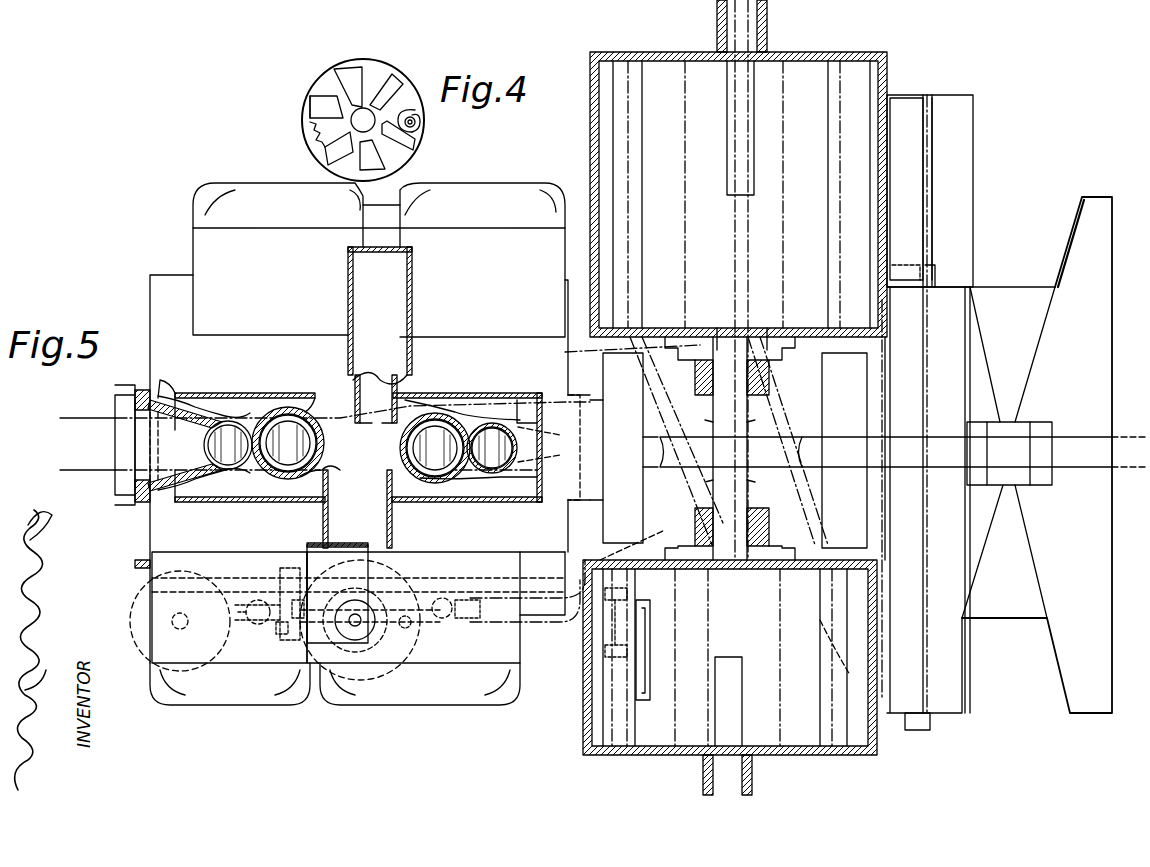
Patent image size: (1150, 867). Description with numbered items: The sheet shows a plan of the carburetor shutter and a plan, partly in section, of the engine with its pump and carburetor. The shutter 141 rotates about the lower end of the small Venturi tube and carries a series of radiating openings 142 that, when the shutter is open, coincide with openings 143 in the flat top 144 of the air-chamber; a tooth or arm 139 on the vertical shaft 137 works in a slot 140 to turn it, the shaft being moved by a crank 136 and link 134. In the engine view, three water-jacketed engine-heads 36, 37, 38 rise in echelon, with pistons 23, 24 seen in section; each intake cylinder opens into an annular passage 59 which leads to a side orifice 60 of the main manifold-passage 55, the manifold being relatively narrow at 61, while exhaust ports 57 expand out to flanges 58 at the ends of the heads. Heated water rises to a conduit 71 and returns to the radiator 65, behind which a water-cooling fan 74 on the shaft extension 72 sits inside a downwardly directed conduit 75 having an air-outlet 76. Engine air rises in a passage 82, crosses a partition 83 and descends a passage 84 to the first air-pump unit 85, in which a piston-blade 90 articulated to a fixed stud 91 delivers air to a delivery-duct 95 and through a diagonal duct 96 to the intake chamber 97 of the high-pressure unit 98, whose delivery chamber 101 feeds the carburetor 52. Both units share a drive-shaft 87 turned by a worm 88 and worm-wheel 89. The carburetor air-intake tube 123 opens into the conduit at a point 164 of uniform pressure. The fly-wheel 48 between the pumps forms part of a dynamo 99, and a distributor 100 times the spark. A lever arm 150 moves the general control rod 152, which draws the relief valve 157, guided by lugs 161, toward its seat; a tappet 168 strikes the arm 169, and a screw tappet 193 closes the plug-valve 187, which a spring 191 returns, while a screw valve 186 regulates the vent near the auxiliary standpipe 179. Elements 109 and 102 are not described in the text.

In FIG. 4, the shutter 141 is at (375, 62).
In FIG. 4, the radiating openings 142 is at (338, 88).
In FIG. 4, the openings 143 is at (310, 118).
In FIG. 4, the flat top 144 is at (312, 140).
In FIG. 4, the slot 140 is at (418, 102).
In FIG. 4, the tooth or arm 139 is at (420, 122).
In FIG. 4, the vertical shaft 137 is at (418, 126).
In FIG. 5, the air-pump unit 85 is at (890, 66).
In FIG. 5, the fixed stud 91 is at (752, 170).
In FIG. 5, the delivery-duct 95 is at (741, 194).
In FIG. 5, the piston-blade 90 is at (686, 232).
In FIG. 5, the passage 84 is at (906, 189).
In FIG. 5, the partition 83 is at (933, 180).
In FIG. 5, the passage 82 is at (968, 412).
In FIG. 5, the conduit 75 is at (1075, 210).
In FIG. 5, the water-cooling fan 74 is at (1008, 452).
In FIG. 5, the air-outlet 76 is at (944, 322).
In FIG. 5, the radiator 65 is at (1110, 328).
In FIG. 5, the shaft extension 72 is at (950, 428).
In FIG. 5, the distributor 100 is at (822, 373).
In FIG. 5, the diagonal duct 96 is at (775, 398).
In FIG. 5, the worm-wheel 89 is at (806, 450).
In FIG. 5, the worm 88 is at (758, 472).
In FIG. 5, the drive-shaft 87 is at (760, 492).
In FIG. 5, the intake point 164 is at (735, 470).
In FIG. 5, the flange 58 is at (130, 392).
In FIG. 5, the exhaust port 57 is at (200, 435).
In FIG. 5, the piston 24 is at (360, 447).
In FIG. 5, the piston 23 is at (361, 445).
In FIG. 5, the annular passage 59 is at (257, 411).
In FIG. 5, the main manifold-passage 55 is at (352, 461).
In FIG. 5, the narrow manifold portion 61 is at (405, 400).
In FIG. 5, the side orifice 60 is at (327, 479).
In FIG. 5, the engine-head 37 is at (485, 503).
In FIG. 5, the engine-head 36 is at (518, 556).
In FIG. 5, the engine-head 38 is at (379, 260).
In FIG. 5, the conduit 71 is at (470, 350).
In FIG. 5, the fly-wheel 48 is at (580, 459).
In FIG. 5, the dynamo 99 is at (603, 525).
In FIG. 5, the lever arm 150 is at (138, 558).
In FIG. 5, the flywheel 109 is at (140, 600).
In FIG. 5, the general control rod 152 is at (248, 578).
In FIG. 5, the screw tappet 193 is at (292, 565).
In FIG. 5, the spring 191 is at (257, 601).
In FIG. 5, the auxiliary standpipe 179 is at (248, 618).
In FIG. 5, the screw valve 186 is at (274, 630).
In FIG. 5, the plug-valve 187 is at (300, 625).
In FIG. 5, the gear wheel 102 is at (360, 620).
In FIG. 5, the link 134 is at (400, 580).
In FIG. 5, the arm or crank 169 is at (442, 597).
In FIG. 5, the tappet 168 is at (468, 598).
In FIG. 5, the crank 136 is at (412, 625).
In FIG. 5, the carburetor 52 is at (410, 640).
In FIG. 5, the air-intake tube 123 is at (540, 618).
In FIG. 5, the high-pressure air-pump unit 98 is at (583, 690).
In FIG. 5, the intake chamber 97 is at (820, 590).
In FIG. 5, the delivery chamber 101 is at (658, 754).
In FIG. 5, the lugs 161 is at (646, 604).
In FIG. 5, the relief valve 157 is at (646, 618).